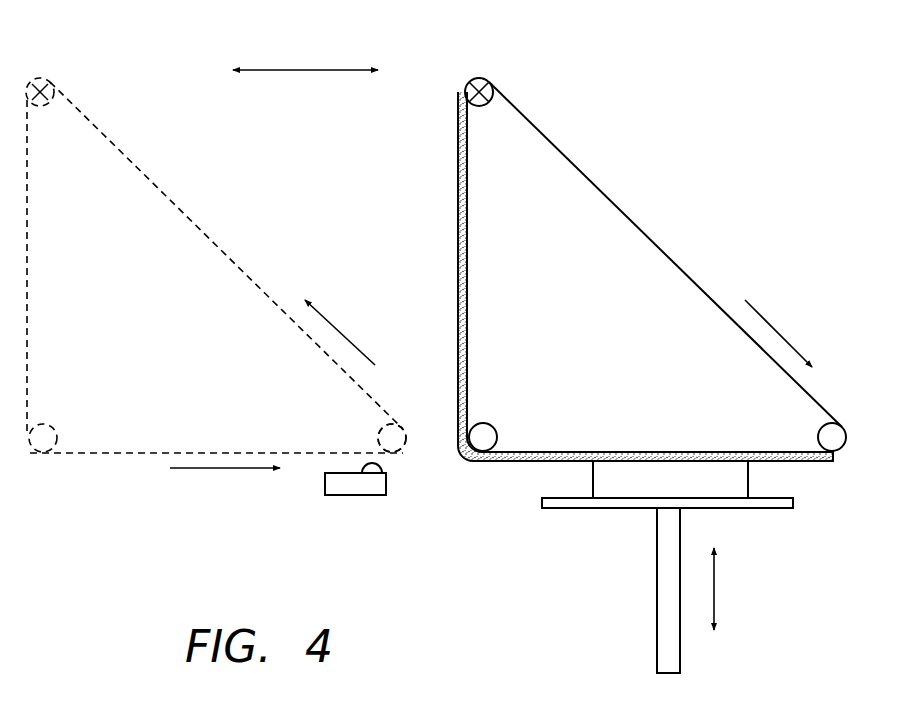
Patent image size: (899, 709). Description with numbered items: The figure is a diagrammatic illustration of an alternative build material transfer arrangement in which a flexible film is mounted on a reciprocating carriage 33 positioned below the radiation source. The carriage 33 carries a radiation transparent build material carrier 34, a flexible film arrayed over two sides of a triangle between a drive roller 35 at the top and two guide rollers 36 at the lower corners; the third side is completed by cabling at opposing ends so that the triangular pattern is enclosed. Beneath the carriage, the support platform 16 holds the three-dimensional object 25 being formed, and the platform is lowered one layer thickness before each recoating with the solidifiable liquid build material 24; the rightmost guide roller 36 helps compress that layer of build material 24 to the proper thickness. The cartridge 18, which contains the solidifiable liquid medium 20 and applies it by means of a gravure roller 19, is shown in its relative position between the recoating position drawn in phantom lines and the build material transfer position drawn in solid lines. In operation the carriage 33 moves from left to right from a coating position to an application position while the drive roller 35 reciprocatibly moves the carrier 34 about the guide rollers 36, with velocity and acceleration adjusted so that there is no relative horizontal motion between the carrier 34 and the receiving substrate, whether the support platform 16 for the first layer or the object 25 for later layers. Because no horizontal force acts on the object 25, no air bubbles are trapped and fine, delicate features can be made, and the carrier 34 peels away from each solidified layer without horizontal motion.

The support platform 16 is at (585, 510).
The cartridge 18 is at (350, 512).
The gravure roller 19 is at (380, 466).
The solidifiable liquid medium 20 is at (370, 465).
The solidifiable liquid build material 24 is at (805, 462).
The three-dimensional object 25 is at (592, 471).
The reciprocating carriage 33 is at (143, 95).
The radiation transparent build material carrier 34 is at (468, 350).
The drive roller 35 is at (484, 78).
The guide rollers 36 is at (497, 427).